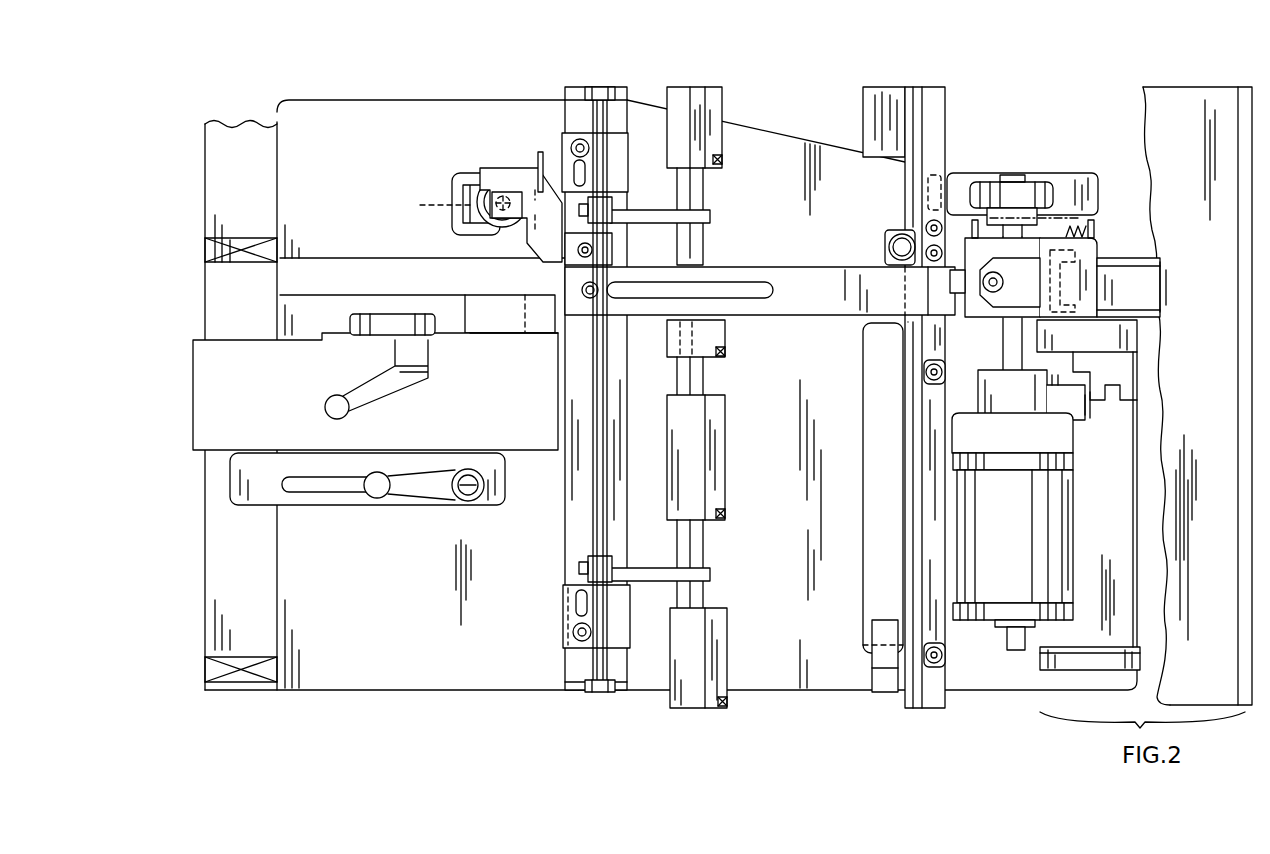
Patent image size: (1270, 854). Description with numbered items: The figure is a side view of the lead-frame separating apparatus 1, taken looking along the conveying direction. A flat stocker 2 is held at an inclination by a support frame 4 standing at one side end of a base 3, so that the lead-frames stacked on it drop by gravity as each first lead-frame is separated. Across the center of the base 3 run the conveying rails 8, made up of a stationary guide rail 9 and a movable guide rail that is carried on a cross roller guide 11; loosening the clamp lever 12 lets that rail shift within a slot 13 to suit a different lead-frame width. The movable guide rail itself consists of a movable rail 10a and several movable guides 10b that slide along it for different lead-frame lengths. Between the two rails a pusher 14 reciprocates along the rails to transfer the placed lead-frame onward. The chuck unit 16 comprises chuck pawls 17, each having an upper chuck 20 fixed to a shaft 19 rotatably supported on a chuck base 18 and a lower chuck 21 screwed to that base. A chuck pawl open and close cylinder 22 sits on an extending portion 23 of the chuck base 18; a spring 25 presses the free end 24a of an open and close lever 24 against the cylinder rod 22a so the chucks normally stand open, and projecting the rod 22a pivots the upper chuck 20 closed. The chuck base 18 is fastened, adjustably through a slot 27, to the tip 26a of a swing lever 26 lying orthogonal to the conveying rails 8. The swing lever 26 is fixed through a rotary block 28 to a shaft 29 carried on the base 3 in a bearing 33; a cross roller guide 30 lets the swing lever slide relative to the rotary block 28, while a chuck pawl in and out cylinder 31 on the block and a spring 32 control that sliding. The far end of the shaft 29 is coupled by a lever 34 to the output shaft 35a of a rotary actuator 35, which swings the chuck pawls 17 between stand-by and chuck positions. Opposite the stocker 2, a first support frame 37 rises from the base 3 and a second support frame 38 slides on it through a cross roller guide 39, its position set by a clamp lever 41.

The lead-frame separating apparatus 1 is at (822, 124).
The stocker 2 is at (1143, 108).
The base 3 is at (800, 690).
The support frame 4 is at (1130, 340).
The conveying rails 8 is at (785, 124).
The stationary guide rail 9 is at (937, 700).
The movable rail 10a is at (712, 590).
The movable guides 10b is at (720, 625).
The cross roller guide 11 is at (318, 455).
The clamp lever 12 is at (415, 505).
The slot 13 is at (302, 485).
The pusher 14 is at (880, 635).
The chuck unit 16 is at (545, 585).
The chuck pawl 17 is at (656, 228).
The chuck base 18 is at (570, 495).
The shaft 19 is at (590, 532).
The upper chuck 20 is at (710, 218).
The lower chuck 21 is at (625, 193).
The chuck pawl open and close cylinder 22 is at (485, 190).
The rod 22a is at (422, 206).
The extending portion 23 is at (475, 225).
The open and close lever 24 is at (547, 250).
The free end 24a is at (505, 200).
The spring 25 is at (540, 160).
The swing lever 26 is at (822, 318).
The tip 26a is at (565, 296).
The slot 27 is at (745, 290).
The rotary block 28 is at (1095, 292).
The shaft 29 is at (1010, 348).
The cross roller guide 30 is at (1095, 250).
The chuck pawl in and out cylinder 31 is at (1165, 290).
The spring 32 is at (1085, 228).
The bearing 33 is at (990, 185).
The lever 34 is at (1040, 415).
The rotary actuator 35 is at (1072, 530).
The output shaft 35a is at (1012, 437).
The first support frame 37 is at (285, 310).
The second support frame 38 is at (352, 352).
The cross roller guide 39 is at (505, 335).
The clamp lever 41 is at (385, 398).